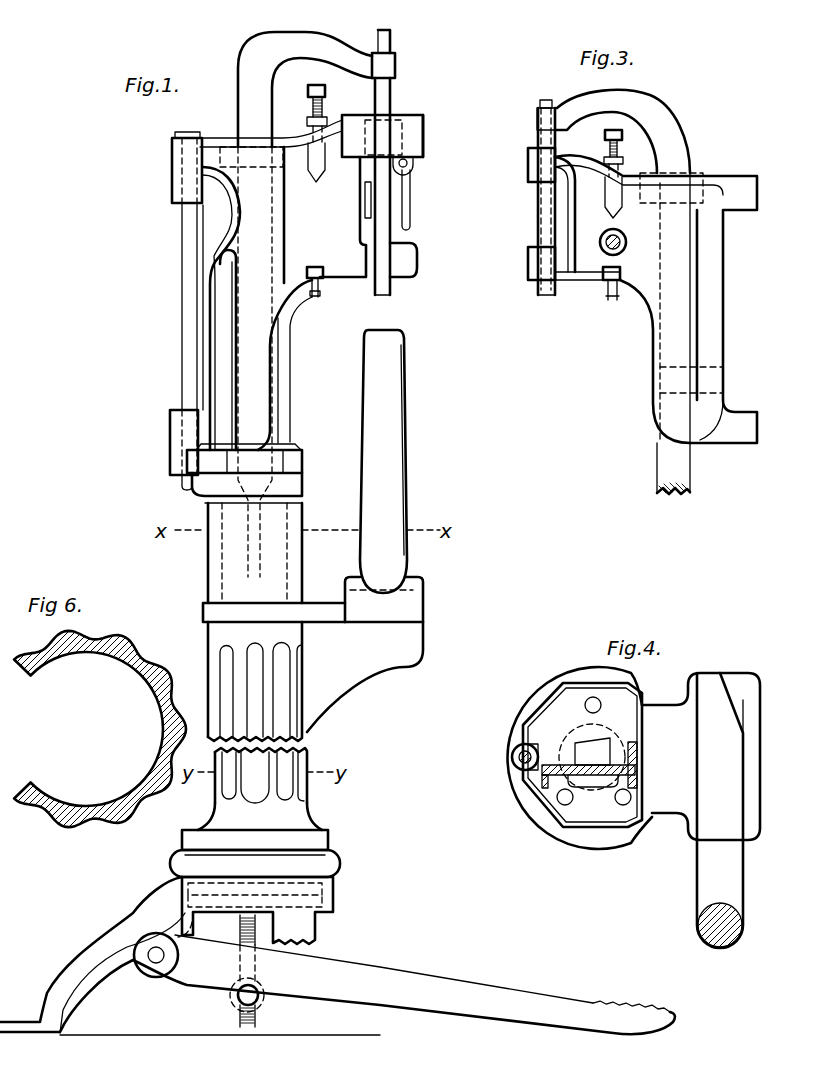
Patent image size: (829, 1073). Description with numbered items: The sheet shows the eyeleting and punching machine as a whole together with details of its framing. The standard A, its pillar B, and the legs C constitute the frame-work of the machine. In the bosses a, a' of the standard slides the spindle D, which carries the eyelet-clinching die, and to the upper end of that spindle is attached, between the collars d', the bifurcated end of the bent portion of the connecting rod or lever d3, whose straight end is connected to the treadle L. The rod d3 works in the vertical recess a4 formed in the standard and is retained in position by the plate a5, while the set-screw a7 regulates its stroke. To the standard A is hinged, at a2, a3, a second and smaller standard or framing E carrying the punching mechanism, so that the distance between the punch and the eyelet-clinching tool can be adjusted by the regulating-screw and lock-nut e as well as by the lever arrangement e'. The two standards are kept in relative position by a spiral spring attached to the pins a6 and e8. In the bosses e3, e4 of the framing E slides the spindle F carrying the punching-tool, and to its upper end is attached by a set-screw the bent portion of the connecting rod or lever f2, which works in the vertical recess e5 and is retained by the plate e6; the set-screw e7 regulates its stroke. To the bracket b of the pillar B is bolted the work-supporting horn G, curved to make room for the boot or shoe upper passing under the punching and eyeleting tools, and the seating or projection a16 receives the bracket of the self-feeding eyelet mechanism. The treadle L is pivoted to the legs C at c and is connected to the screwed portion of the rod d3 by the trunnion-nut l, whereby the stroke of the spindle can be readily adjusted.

In FIG. 1, the standard A is at (290, 378).
In FIG. 4, the standard A is at (595, 776).
In FIG. 1, the pillar B is at (257, 591).
In FIG. 4, the pillar B is at (590, 853).
In FIG. 6, the pillar B is at (116, 653).
In FIG. 1, the legs C is at (147, 910).
In FIG. 1, the spindle D is at (393, 97).
In FIG. 1, the second standard or framing E is at (218, 212).
In FIG. 3, the second standard or framing E is at (712, 460).
In FIG. 3, the spindle F is at (538, 212).
In FIG. 1, the work-supporting horn G is at (383, 461).
In FIG. 4, the work-supporting horn G is at (720, 810).
In FIG. 1, the treadle L is at (404, 984).
In FIG. 1, the boss a is at (393, 124).
In FIG. 1, the boss a' is at (408, 271).
In FIG. 1, the guide plate a'' is at (349, 200).
In FIG. 1, the hinge point a2 is at (172, 150).
In FIG. 1, the hinge point a3 is at (170, 456).
In FIG. 4, the hinge point a3 is at (511, 757).
In FIG. 1, the vertical recess a4 is at (236, 330).
In FIG. 1, the plate a5 is at (230, 147).
In FIG. 1, the pin a6 is at (318, 297).
In FIG. 1, the set-screw a7 is at (326, 99).
In FIG. 1, the seating or projection a16 is at (423, 133).
In FIG. 1, the bracket b is at (365, 654).
In FIG. 4, the bracket b is at (701, 756).
In FIG. 1, the treadle pivot c is at (155, 958).
In FIG. 1, the collars d' is at (396, 51).
In FIG. 1, the collar on rod d'' is at (409, 58).
In FIG. 1, the connecting rod or lever d3 is at (258, 1021).
In FIG. 4, the connecting rod or lever d3 is at (592, 751).
In FIG. 3, the regulating-screw and lock-nut e is at (621, 233).
In FIG. 1, the lever arrangement e' is at (418, 193).
In FIG. 3, the boss e3 is at (528, 160).
In FIG. 3, the boss e4 is at (528, 262).
In FIG. 3, the vertical recess e5 is at (700, 274).
In FIG. 3, the plate e6 is at (700, 175).
In FIG. 3, the set-screw e7 is at (607, 137).
In FIG. 3, the pin e8 is at (611, 301).
In FIG. 3, the connecting rod or lever f2 is at (622, 292).
In FIG. 1, the trunnion-nut l is at (262, 991).